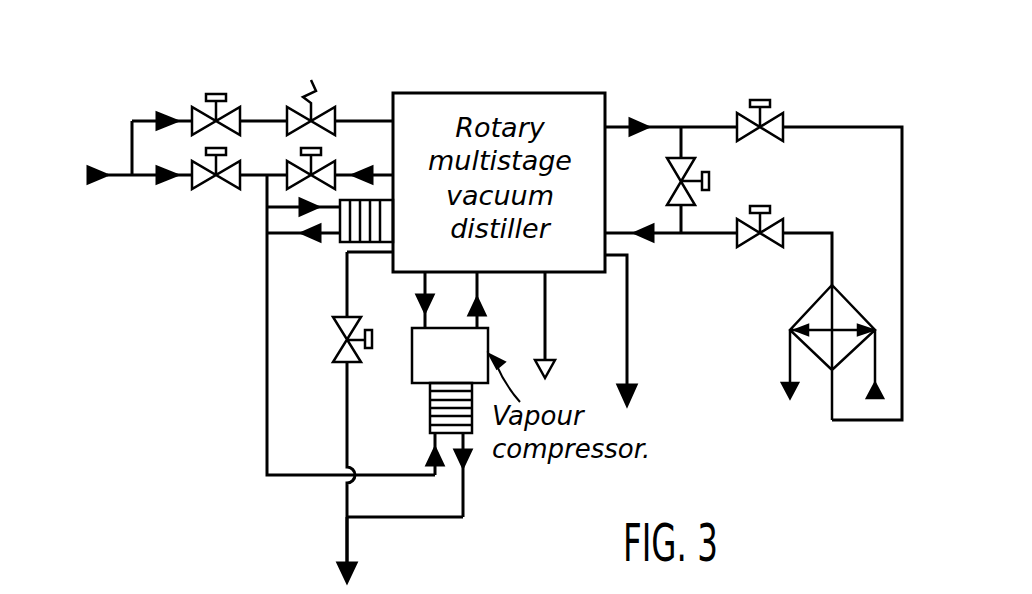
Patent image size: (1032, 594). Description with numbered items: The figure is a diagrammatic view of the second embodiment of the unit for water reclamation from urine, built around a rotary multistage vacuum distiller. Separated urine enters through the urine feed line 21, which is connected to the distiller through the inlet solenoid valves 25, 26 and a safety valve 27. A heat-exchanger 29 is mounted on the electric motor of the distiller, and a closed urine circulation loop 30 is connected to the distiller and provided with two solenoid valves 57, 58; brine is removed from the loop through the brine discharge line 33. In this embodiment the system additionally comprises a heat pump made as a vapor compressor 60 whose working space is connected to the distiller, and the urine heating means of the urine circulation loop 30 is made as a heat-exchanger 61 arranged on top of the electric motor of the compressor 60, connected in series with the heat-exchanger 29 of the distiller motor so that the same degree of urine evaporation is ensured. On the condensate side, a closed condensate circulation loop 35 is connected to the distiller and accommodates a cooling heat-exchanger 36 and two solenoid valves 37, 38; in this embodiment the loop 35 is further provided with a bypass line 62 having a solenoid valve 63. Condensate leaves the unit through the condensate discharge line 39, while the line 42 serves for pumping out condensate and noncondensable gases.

The urine feed line 21 is at (125, 177).
The inlet solenoid valve 25 is at (199, 106).
The inlet solenoid valve 26 is at (230, 183).
The safety valve 27 is at (325, 112).
The solenoid valve 57 is at (331, 170).
The heat-exchanger 29 is at (347, 245).
The urine circulation loop 30 is at (268, 325).
The solenoid valve 58 is at (334, 328).
The brine discharge line 33 is at (347, 539).
The vapor compressor 60 is at (450, 355).
The heat-exchanger 61 is at (440, 410).
The line for pumping out condensate and noncondensable gases 42 is at (548, 331).
The condensate discharge line 39 is at (630, 350).
The bypass line 62 is at (685, 138).
The solenoid valve 63 is at (673, 173).
The solenoid valve 38 is at (775, 120).
The condensate circulation loop 35 is at (866, 127).
The solenoid valve 37 is at (770, 240).
The cooling heat-exchanger 36 is at (845, 302).